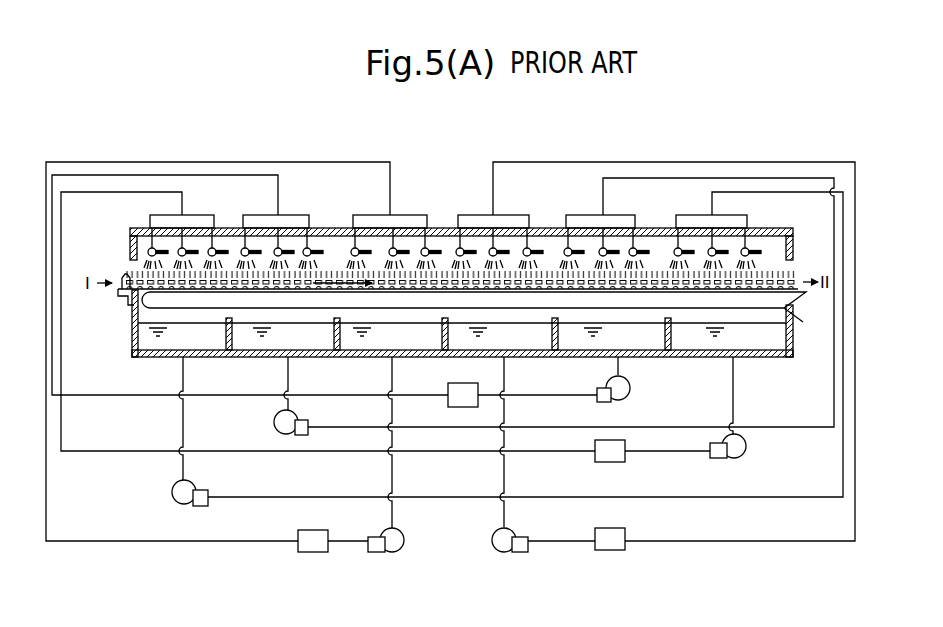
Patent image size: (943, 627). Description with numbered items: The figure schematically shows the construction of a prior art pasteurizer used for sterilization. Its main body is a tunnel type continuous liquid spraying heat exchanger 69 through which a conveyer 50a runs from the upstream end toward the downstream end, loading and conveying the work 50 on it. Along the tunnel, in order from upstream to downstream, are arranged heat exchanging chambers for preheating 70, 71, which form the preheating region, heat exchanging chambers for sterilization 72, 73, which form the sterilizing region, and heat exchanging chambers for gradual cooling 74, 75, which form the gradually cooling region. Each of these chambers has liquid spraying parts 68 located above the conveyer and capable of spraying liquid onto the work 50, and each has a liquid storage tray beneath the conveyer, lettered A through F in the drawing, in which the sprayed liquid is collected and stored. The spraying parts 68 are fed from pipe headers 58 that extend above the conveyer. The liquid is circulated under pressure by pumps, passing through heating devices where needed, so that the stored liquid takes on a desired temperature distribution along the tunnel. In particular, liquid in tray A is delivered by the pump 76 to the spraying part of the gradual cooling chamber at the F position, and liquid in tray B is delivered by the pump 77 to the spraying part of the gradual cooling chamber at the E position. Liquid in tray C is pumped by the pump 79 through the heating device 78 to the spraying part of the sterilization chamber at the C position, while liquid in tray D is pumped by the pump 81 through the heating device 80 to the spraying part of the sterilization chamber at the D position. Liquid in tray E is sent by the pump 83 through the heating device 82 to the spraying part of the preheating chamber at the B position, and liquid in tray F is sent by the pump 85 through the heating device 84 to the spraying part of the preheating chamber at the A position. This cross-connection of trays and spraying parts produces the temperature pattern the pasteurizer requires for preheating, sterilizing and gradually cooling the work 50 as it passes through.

The work 50 is at (123, 272).
The conveyer 50a is at (803, 322).
The spray pipe manifold 58 is at (155, 226).
The liquid spraying part 68 is at (315, 249).
The tunnel type continuous liquid spraying heat exchanger 69 is at (441, 222).
The heat exchanging chamber for preheating 70 is at (167, 365).
The heat exchanging chamber for preheating 71 is at (278, 363).
The heat exchanging chamber for sterilization 72 is at (378, 362).
The heat exchanging chamber for sterilization 73 is at (470, 362).
The heat exchanging chamber for gradual cooling 74 is at (592, 360).
The heat exchanging chamber for gradual cooling 75 is at (717, 360).
The pump 76 is at (192, 505).
The pump 77 is at (274, 427).
The heating device 78 is at (315, 552).
The pump 79 is at (388, 553).
The heating device 80 is at (612, 550).
The pump 81 is at (497, 552).
The heating device 82 is at (462, 407).
The pump 83 is at (631, 398).
The heating device 84 is at (625, 462).
The pump 85 is at (745, 455).